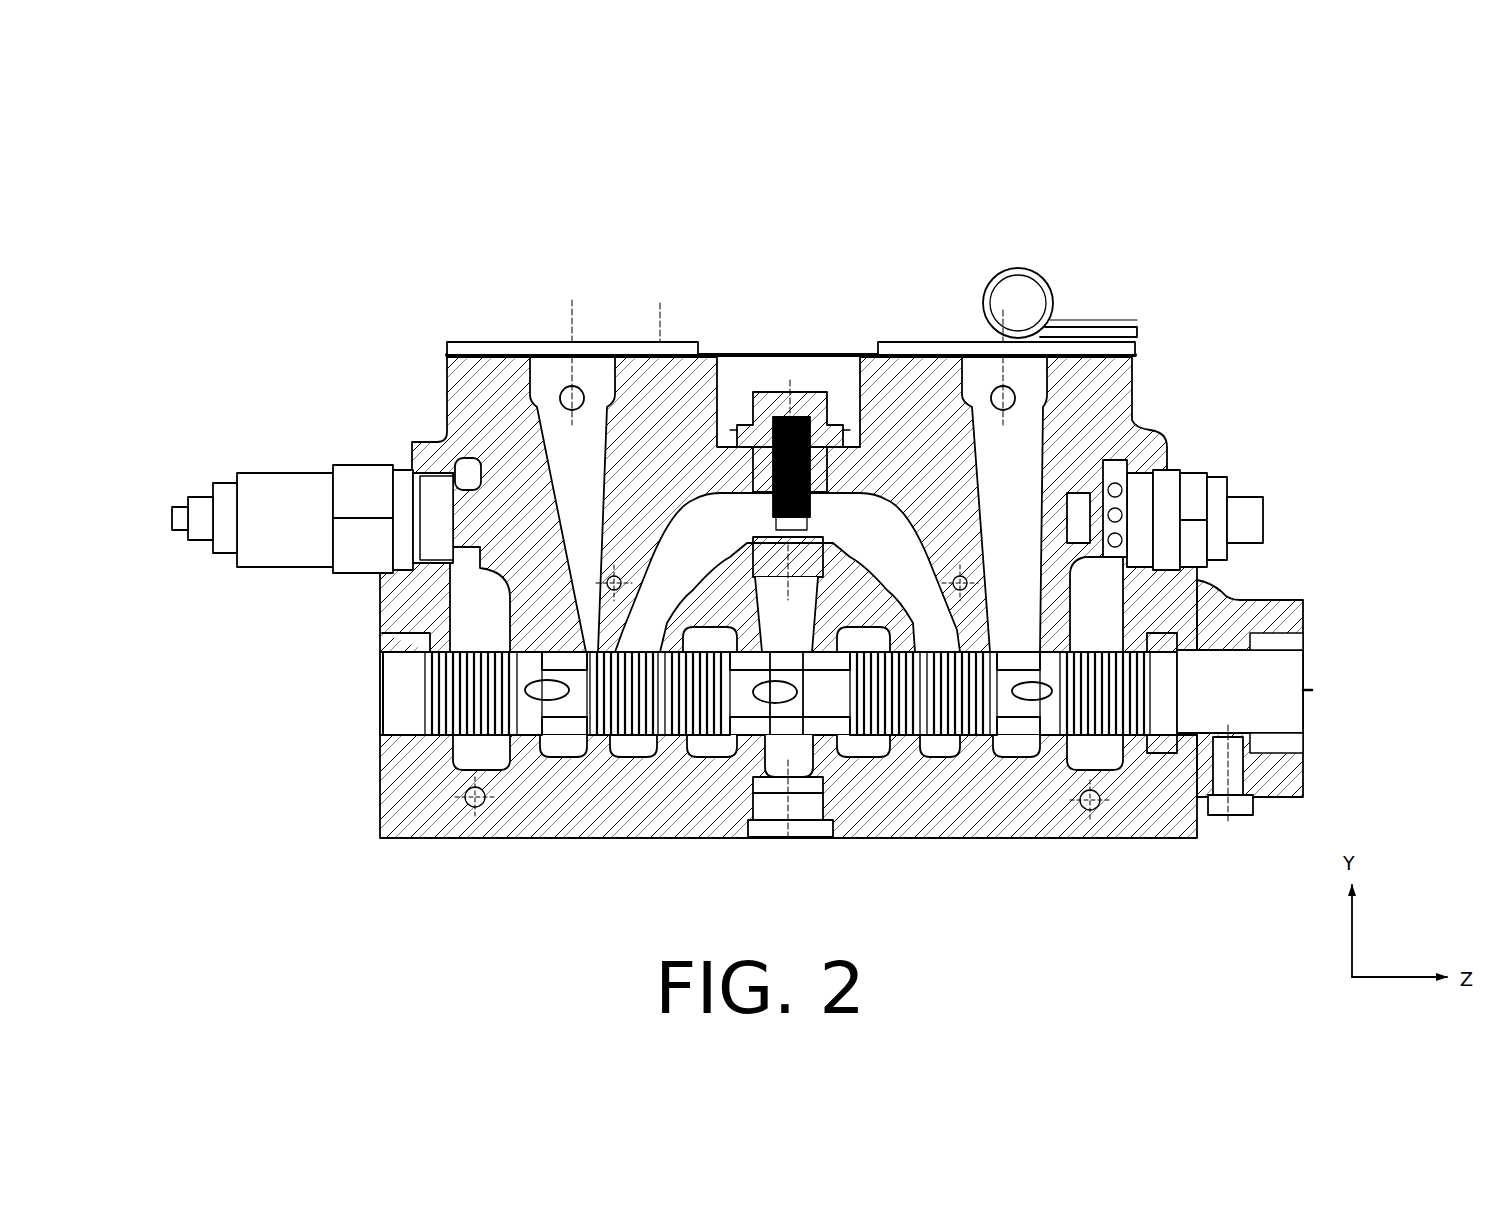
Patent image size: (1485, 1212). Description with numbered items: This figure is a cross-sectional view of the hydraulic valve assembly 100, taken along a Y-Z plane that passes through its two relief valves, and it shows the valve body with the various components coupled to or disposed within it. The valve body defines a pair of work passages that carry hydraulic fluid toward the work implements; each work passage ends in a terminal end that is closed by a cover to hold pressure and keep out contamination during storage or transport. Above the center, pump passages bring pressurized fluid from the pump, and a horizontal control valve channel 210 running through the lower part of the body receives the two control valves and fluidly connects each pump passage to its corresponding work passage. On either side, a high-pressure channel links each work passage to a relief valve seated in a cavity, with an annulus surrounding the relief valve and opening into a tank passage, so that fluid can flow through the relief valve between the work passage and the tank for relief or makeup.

The hydraulic valve assembly 100 is at (205, 150).
The control valve channel 210 is at (880, 750).